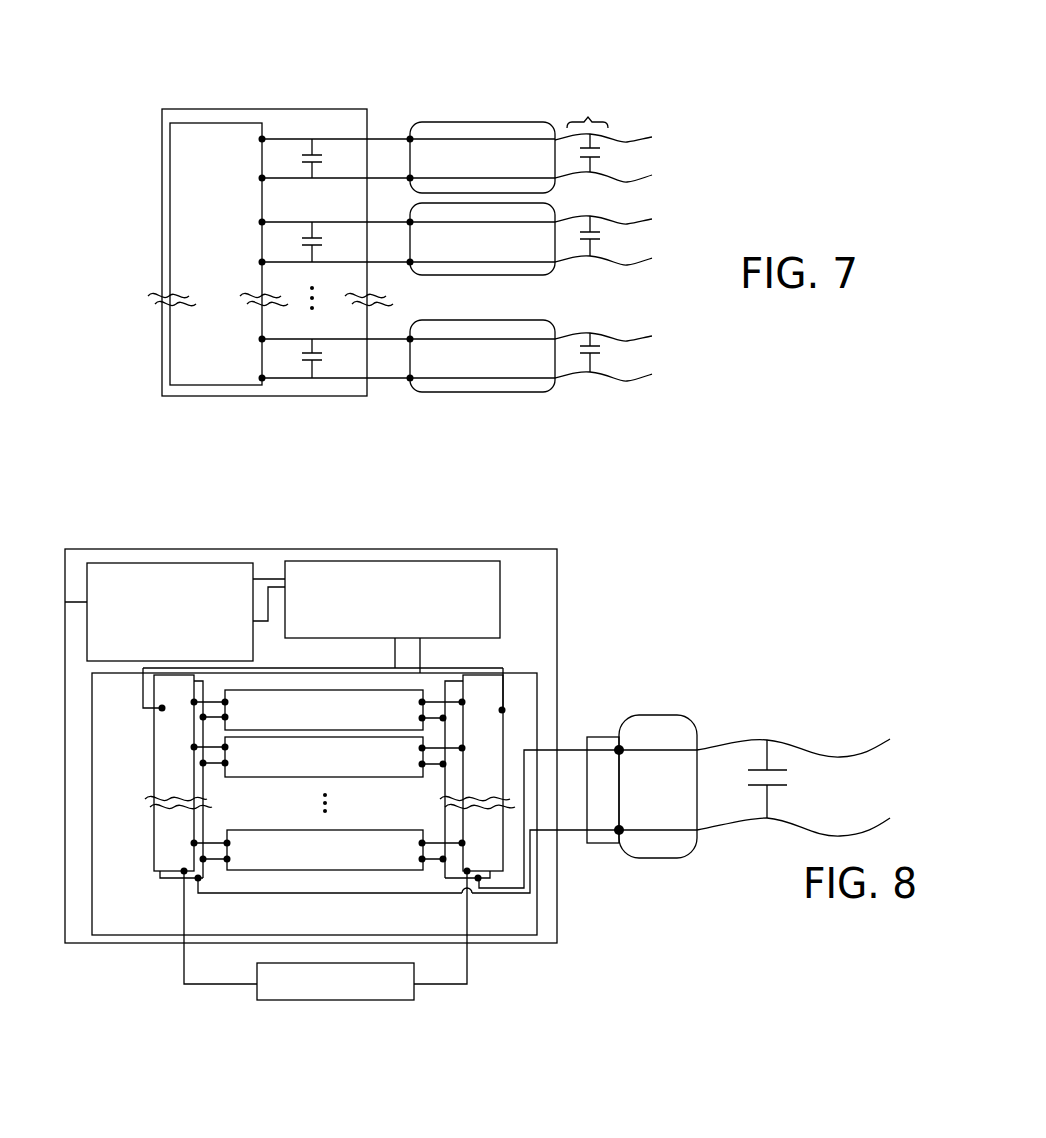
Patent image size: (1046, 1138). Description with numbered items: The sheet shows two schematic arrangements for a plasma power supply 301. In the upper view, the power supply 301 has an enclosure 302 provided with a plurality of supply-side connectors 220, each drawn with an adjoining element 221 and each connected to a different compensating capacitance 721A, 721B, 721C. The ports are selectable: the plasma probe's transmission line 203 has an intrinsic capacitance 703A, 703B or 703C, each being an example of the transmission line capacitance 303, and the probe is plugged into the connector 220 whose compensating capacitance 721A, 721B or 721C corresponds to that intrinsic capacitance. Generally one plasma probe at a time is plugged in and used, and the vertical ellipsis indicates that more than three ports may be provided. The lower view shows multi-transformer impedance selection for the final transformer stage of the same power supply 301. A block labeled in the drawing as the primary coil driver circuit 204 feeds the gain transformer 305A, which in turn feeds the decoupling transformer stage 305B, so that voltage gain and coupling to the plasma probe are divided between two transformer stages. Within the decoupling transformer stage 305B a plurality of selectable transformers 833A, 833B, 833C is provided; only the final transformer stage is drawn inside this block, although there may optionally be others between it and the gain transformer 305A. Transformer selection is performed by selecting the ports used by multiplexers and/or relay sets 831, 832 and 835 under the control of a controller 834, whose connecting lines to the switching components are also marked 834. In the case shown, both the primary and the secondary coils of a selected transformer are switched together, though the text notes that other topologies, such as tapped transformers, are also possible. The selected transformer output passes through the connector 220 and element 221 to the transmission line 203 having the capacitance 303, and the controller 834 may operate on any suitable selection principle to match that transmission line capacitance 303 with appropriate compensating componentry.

In FIG. 7, the enclosure 302 is at (162, 128).
In FIG. 7, the power supply 301 is at (203, 122).
In FIG. 8, the power supply 301 is at (143, 549).
In FIG. 7, the supply-side connector 220 is at (390, 132).
In FIG. 8, the supply-side connector 220 is at (597, 736).
In FIG. 7, the primary coil 221 is at (453, 120).
In FIG. 8, the primary coil 221 is at (667, 715).
In FIG. 7, the transmission line capacitance 303 is at (589, 112).
In FIG. 8, the transmission line capacitance 303 is at (780, 787).
In FIG. 7, the transmission line 203 is at (640, 135).
In FIG. 7, the intrinsic capacitance 703A is at (603, 157).
In FIG. 7, the intrinsic capacitance 703B is at (600, 240).
In FIG. 7, the intrinsic capacitance 703C is at (600, 358).
In FIG. 7, the compensating capacitance 721A is at (350, 139).
In FIG. 7, the compensating capacitance 721B is at (350, 222).
In FIG. 7, the compensating capacitance 721C is at (347, 338).
In FIG. 8, the primary coil driver circuit 204 is at (205, 563).
In FIG. 8, the gain transformer 305A is at (385, 561).
In FIG. 8, the decoupling transformer stage 305B is at (160, 935).
In FIG. 8, the multiplexer 831 is at (480, 673).
In FIG. 8, the multiplexer 832 is at (147, 790).
In FIG. 8, the selectable transformer 833A is at (312, 720).
In FIG. 8, the selectable transformer 833B is at (312, 767).
In FIG. 8, the selectable transformer 833C is at (355, 860).
In FIG. 8, the controller 834 is at (246, 785).
In FIG. 8, the multiplexer 835 is at (440, 795).